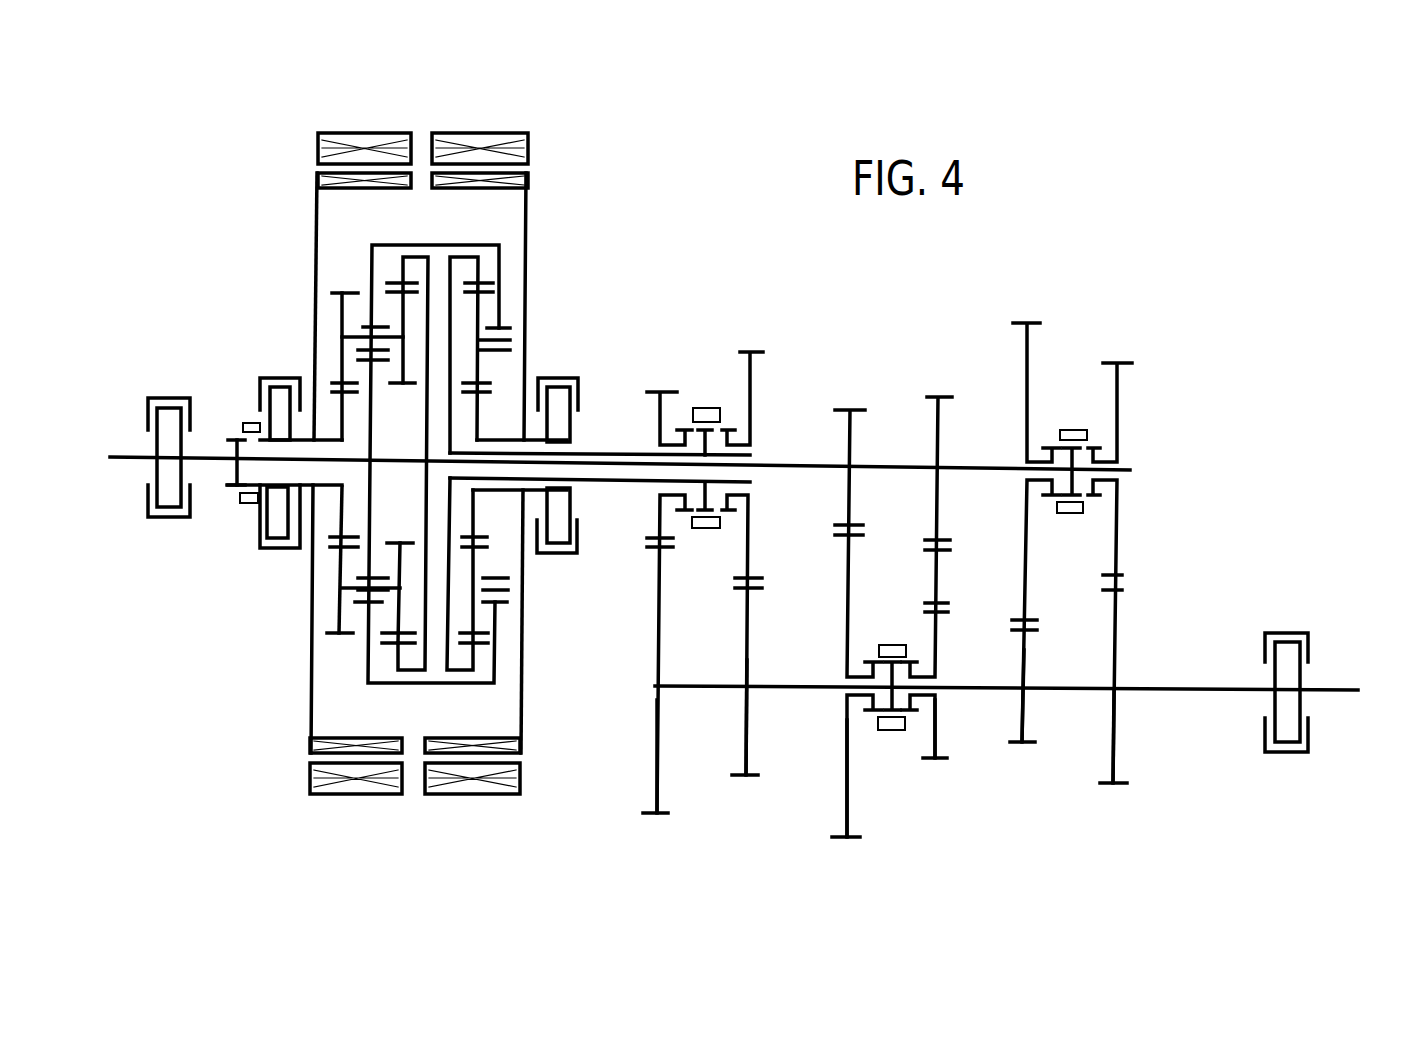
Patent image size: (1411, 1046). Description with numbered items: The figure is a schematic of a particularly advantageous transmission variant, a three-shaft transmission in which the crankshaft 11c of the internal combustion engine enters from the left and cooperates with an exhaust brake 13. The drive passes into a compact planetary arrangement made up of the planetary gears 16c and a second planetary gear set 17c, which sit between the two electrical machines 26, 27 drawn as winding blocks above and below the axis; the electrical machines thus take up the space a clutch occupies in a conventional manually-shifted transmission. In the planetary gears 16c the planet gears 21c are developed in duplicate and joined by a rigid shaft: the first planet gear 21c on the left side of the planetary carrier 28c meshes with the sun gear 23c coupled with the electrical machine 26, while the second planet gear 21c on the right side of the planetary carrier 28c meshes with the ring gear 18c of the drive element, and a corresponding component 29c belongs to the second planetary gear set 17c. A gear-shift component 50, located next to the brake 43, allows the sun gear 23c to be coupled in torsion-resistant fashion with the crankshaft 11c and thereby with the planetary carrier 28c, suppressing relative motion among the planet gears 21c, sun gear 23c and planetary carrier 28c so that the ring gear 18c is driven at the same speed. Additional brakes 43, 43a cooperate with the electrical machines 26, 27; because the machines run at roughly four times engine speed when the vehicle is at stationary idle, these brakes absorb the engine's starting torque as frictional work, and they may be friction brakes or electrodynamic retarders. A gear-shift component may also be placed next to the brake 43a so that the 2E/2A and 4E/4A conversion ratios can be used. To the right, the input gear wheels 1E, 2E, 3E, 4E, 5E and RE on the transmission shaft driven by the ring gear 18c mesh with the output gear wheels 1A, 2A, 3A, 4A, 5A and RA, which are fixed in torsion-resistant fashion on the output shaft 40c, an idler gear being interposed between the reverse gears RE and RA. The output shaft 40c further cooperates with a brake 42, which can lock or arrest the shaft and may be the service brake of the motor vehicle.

The crankshaft 11c is at (127, 455).
The exhaust brake 13 is at (165, 517).
The gear-shift component 50 is at (247, 503).
The sun gear 23c is at (348, 422).
The brake 43 is at (265, 378).
The brake 43a is at (558, 387).
The electrical machine 26 is at (317, 175).
The electrical machine 27 is at (535, 182).
The planetary gears 16c is at (353, 213).
The planetary gear set 17c is at (512, 216).
The ring gear 18c is at (410, 268).
The planetary carrier 28c is at (372, 268).
The ring gear 29c is at (505, 277).
The planet gears 21c is at (343, 320).
The input gear wheel 2E is at (667, 582).
The output gear wheel 2A is at (658, 779).
The input gear wheel 4E is at (743, 541).
The output gear wheel 4A is at (749, 740).
The input gear wheel 1E is at (857, 603).
The output gear wheel 1A is at (845, 797).
The input gear wheel RE is at (929, 558).
The output gear wheel RA is at (937, 751).
The input gear wheel 5E is at (1035, 511).
The output gear wheel 5A is at (1023, 720).
The input gear wheel 3E is at (1110, 553).
The output gear wheel 3A is at (1115, 761).
The output shaft 40c is at (1332, 688).
The brake 42 is at (1290, 752).